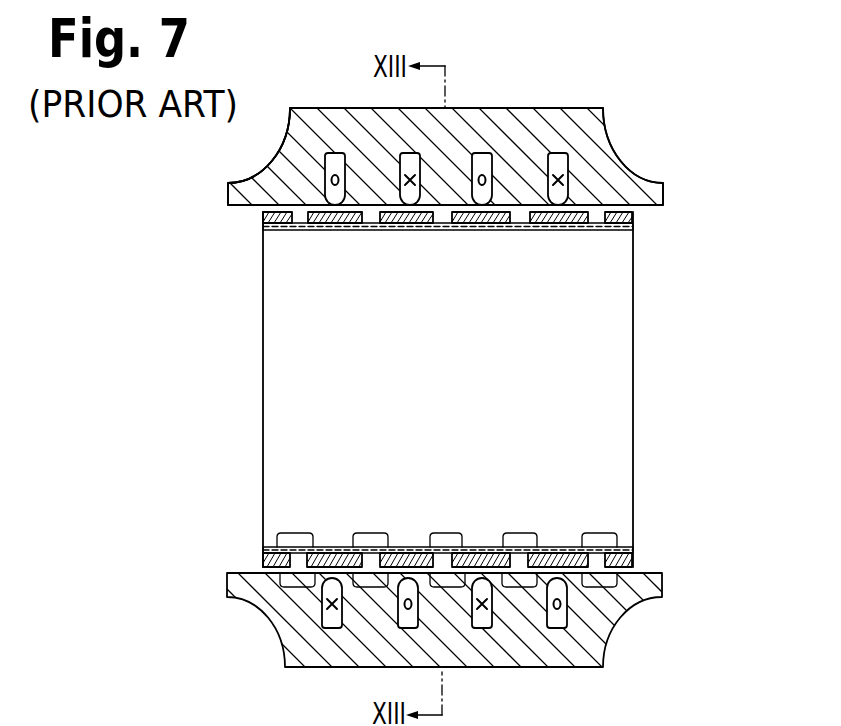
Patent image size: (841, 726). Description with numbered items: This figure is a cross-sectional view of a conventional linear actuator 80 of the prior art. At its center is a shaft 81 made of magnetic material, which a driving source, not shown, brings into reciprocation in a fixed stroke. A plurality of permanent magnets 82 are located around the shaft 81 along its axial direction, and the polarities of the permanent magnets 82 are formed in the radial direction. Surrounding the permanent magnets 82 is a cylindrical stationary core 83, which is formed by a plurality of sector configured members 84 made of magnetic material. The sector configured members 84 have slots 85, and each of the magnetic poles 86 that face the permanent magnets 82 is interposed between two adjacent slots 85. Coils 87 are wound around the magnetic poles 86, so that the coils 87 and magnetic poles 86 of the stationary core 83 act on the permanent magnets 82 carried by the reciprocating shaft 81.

The linear actuator 80 is at (614, 128).
The shaft 81 is at (535, 230).
The permanent magnets 82 is at (263, 218).
The stationary core 83 is at (560, 105).
The sector configured members 84 is at (350, 120).
The slots 85 is at (303, 117).
The magnetic poles 86 is at (520, 190).
The coils 87 is at (563, 163).